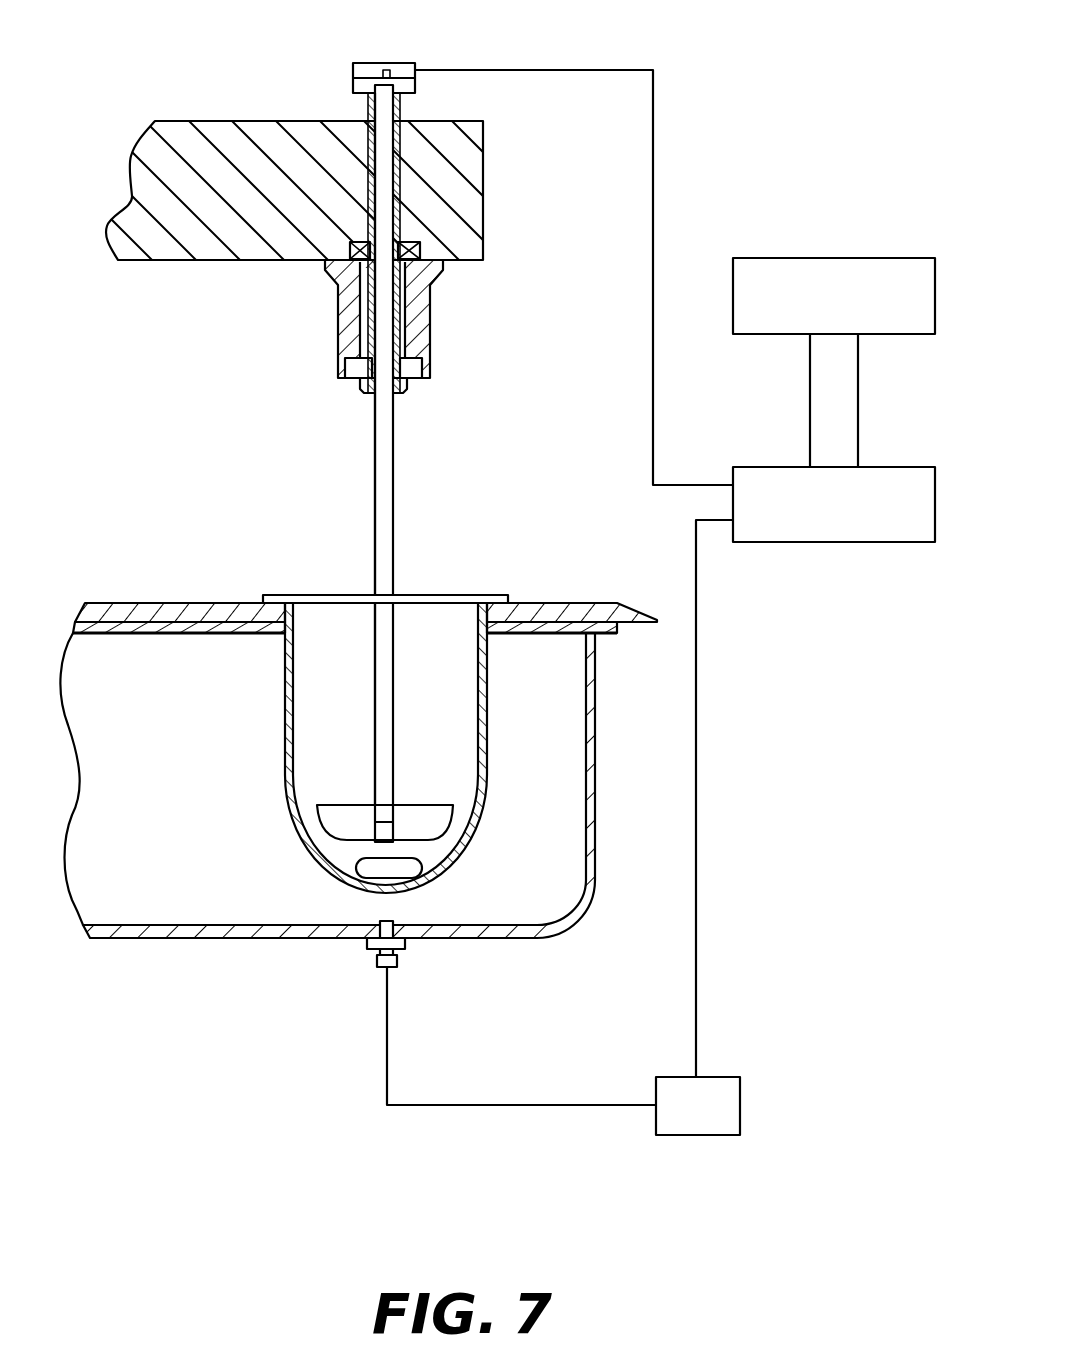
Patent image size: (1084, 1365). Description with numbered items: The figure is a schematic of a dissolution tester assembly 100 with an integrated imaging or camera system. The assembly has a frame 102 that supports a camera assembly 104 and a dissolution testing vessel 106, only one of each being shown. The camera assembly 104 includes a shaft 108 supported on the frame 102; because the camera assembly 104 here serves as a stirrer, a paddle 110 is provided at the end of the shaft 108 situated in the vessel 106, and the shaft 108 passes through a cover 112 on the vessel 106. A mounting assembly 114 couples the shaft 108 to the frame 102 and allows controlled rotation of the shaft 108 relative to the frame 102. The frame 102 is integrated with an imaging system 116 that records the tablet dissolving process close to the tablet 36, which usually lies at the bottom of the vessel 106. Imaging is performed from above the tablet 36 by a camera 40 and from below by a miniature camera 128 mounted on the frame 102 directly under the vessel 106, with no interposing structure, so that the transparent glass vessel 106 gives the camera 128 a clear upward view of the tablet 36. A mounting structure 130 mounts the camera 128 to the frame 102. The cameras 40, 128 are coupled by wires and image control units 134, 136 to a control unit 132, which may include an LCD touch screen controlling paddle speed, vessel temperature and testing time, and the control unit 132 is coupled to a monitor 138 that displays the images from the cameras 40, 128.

The dissolution tester assembly 100 is at (737, 47).
The frame 102 is at (248, 121).
The camera assembly 104 is at (397, 497).
The dissolution testing vessel 106 is at (285, 697).
The shaft 108 is at (375, 532).
The paddle 110 is at (340, 805).
The cover 112 is at (485, 595).
The mounting assembly 114 is at (430, 333).
The imaging system 116 is at (338, 913).
The camera 128 is at (393, 921).
The mounting structure 130 is at (403, 950).
The control unit 132 is at (832, 542).
The image control unit 134 is at (397, 64).
The image control unit 136 is at (730, 1077).
The monitor 138 is at (842, 258).
The tablet 36 is at (357, 866).
The camera 40 is at (392, 819).